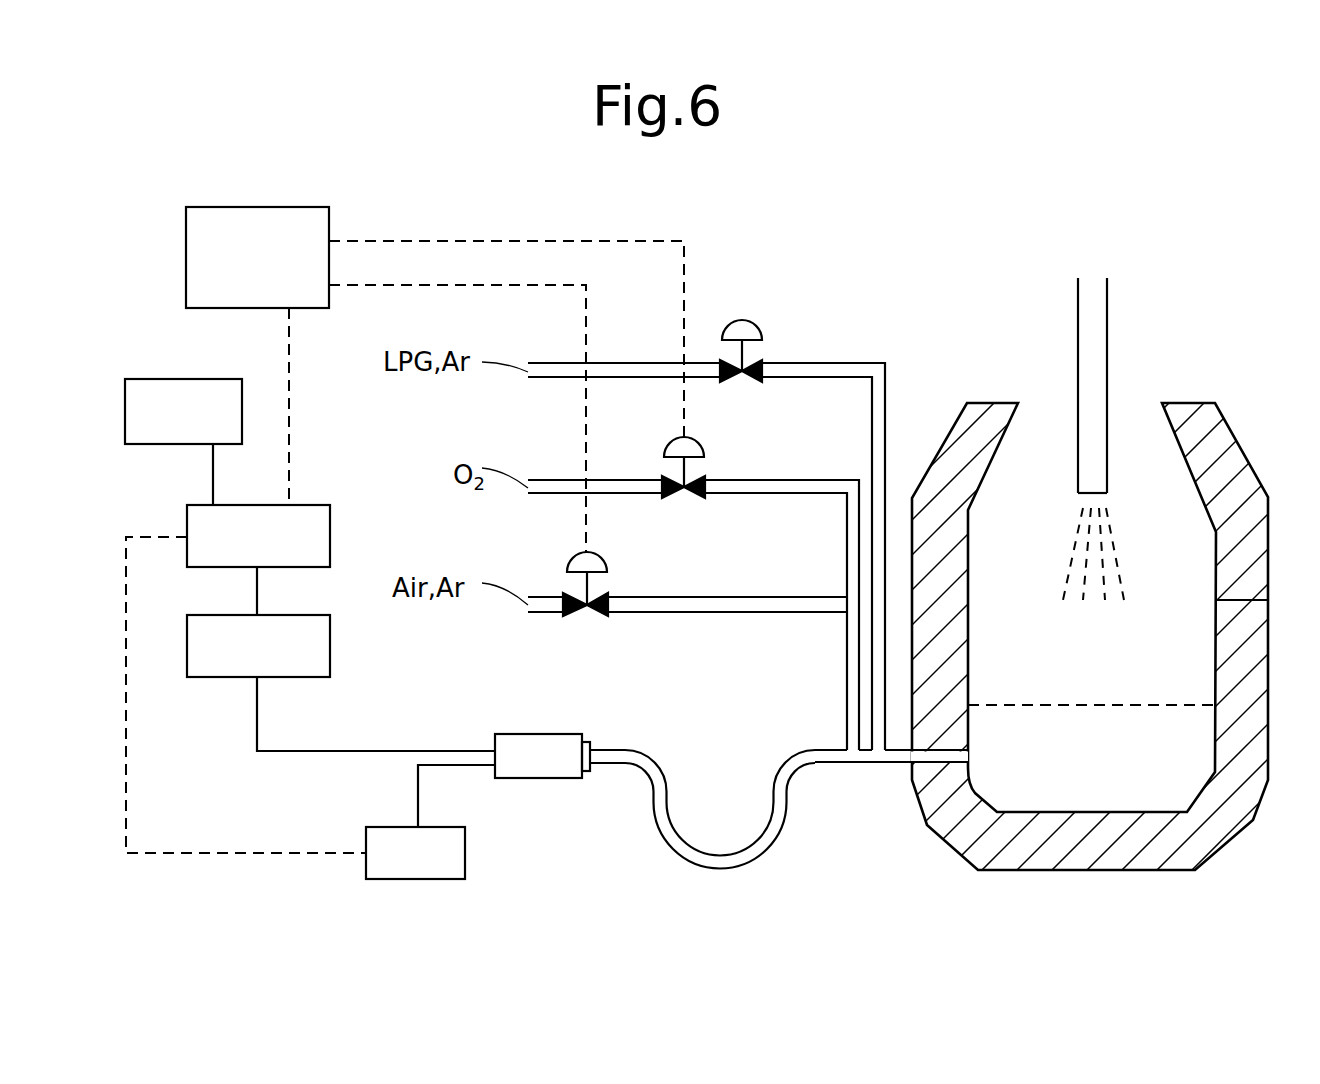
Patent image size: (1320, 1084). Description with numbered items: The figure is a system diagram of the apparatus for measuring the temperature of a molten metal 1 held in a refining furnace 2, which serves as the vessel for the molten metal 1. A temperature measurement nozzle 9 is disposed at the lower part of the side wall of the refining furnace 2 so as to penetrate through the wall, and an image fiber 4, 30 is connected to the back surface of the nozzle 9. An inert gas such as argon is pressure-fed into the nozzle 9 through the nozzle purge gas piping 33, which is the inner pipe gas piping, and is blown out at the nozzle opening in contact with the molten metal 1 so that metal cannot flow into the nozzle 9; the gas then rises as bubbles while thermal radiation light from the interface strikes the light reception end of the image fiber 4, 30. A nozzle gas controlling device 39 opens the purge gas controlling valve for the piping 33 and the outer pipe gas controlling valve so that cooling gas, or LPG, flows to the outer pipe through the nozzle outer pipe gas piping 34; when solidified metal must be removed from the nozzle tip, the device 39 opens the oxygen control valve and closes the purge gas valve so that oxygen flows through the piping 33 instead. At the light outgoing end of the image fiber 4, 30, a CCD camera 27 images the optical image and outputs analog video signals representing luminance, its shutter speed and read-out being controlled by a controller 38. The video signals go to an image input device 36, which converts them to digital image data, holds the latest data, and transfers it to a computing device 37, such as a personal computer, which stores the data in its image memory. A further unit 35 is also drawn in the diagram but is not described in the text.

The molten metal 1 is at (1080, 723).
The refining furnace 2 is at (938, 452).
The image fiber 4 is at (707, 819).
The image fiber 30 is at (693, 860).
The temperature measurement nozzle 9 is at (893, 756).
The CCD camera 27 is at (538, 768).
The nozzle purge gas piping 33 is at (850, 695).
The nozzle outer pipe gas piping 34 is at (837, 368).
The temperature measuring device 35 is at (375, 845).
The image input device 36 is at (195, 638).
The computing device 37 is at (195, 528).
The controller 38 is at (150, 390).
The nozzle gas controlling device 39 is at (195, 265).